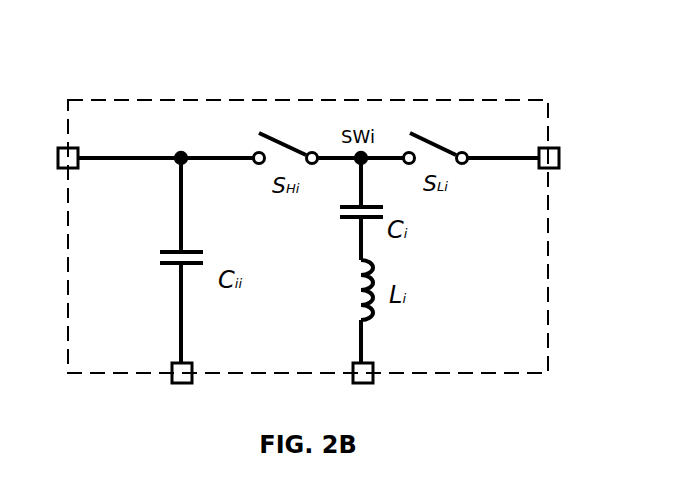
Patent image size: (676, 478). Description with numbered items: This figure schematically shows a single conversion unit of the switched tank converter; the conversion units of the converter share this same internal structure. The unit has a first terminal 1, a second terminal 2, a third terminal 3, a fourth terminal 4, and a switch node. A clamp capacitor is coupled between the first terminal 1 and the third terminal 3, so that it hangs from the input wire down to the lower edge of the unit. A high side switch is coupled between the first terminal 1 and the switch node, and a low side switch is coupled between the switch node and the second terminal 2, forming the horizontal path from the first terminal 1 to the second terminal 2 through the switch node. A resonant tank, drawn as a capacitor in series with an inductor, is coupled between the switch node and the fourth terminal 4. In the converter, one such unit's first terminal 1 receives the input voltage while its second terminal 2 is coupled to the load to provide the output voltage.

The first terminal 1 is at (57, 158).
The second terminal 2 is at (559, 159).
The third terminal 3 is at (182, 386).
The fourth terminal 4 is at (363, 386).